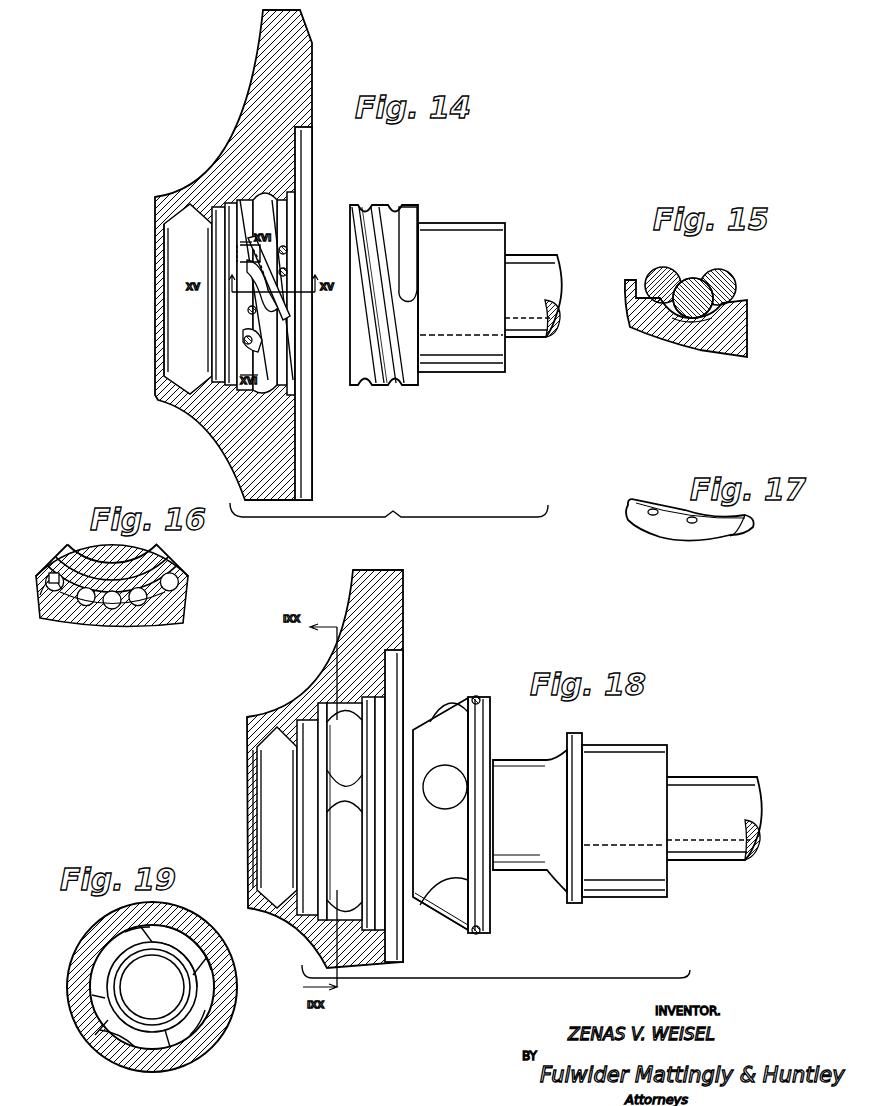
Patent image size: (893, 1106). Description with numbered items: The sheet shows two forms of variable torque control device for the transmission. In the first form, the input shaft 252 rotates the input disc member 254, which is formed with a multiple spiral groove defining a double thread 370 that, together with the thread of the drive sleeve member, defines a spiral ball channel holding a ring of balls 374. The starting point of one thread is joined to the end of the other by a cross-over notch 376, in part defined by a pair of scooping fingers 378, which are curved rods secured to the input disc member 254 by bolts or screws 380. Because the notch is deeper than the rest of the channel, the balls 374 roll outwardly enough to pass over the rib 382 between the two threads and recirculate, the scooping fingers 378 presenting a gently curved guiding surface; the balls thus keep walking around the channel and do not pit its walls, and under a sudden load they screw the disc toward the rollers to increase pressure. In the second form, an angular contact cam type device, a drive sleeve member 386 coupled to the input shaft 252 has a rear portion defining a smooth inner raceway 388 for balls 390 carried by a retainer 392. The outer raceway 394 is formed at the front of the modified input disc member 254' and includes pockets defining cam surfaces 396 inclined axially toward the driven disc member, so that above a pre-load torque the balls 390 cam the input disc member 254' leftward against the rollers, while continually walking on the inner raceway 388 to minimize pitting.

In FIG. 14, the input shaft 252 is at (548, 266).
In FIG. 18, the input shaft 252 is at (725, 784).
In FIG. 15, the input disc member 254 is at (686, 325).
In FIG. 16, the input disc member 254 is at (137, 586).
In FIG. 19, the input disc member 254 is at (169, 987).
In FIG. 18, the input disc member 254' is at (351, 769).
In FIG. 14, the double thread 370 is at (292, 202).
In FIG. 15, the balls 374 is at (692, 280).
In FIG. 16, the balls 374 is at (167, 582).
In FIG. 14, the cross-over notch 376 is at (280, 316).
In FIG. 15, the cross-over notch 376 is at (700, 338).
In FIG. 16, the cross-over notch 376 is at (137, 610).
In FIG. 14, the scooping fingers 378 is at (287, 232).
In FIG. 15, the scooping fingers 378 is at (672, 248).
In FIG. 17, the scooping fingers 378 is at (643, 505).
In FIG. 16, the scooping fingers 378 is at (53, 592).
In FIG. 14, the bolts or screws 380 is at (287, 251).
In FIG. 16, the bolts or screws 380 is at (99, 572).
In FIG. 14, the rib 382 is at (240, 262).
In FIG. 18, the drive sleeve member 386 is at (623, 748).
In FIG. 18, the inner raceway 388 is at (547, 766).
In FIG. 18, the balls 390 is at (450, 705).
In FIG. 18, the retainer 392 is at (463, 863).
In FIG. 18, the outer raceway 394 is at (353, 737).
In FIG. 19, the outer raceway 394 is at (207, 957).
In FIG. 19, the cam surfaces 396 is at (77, 1027).